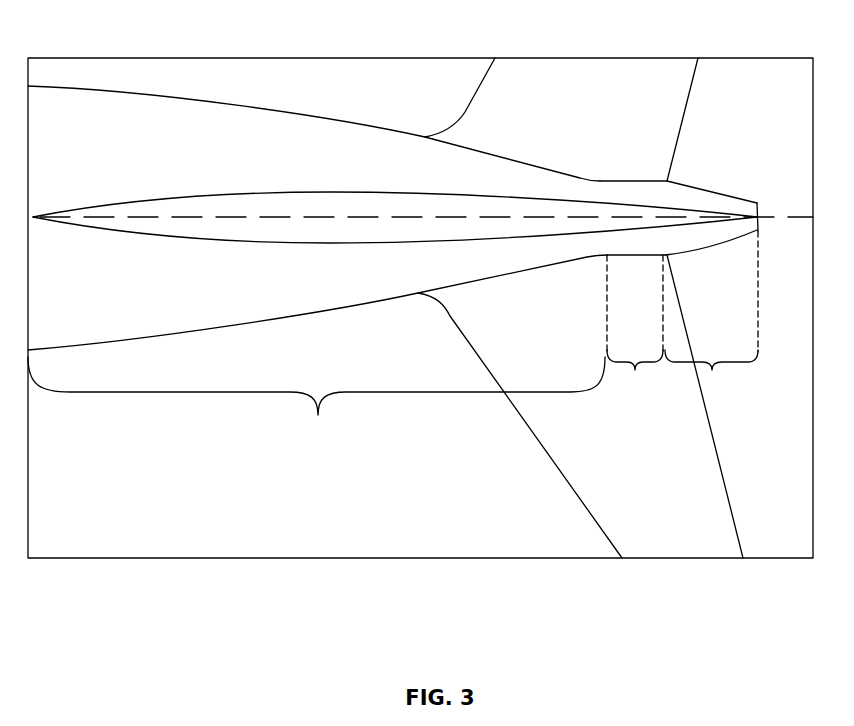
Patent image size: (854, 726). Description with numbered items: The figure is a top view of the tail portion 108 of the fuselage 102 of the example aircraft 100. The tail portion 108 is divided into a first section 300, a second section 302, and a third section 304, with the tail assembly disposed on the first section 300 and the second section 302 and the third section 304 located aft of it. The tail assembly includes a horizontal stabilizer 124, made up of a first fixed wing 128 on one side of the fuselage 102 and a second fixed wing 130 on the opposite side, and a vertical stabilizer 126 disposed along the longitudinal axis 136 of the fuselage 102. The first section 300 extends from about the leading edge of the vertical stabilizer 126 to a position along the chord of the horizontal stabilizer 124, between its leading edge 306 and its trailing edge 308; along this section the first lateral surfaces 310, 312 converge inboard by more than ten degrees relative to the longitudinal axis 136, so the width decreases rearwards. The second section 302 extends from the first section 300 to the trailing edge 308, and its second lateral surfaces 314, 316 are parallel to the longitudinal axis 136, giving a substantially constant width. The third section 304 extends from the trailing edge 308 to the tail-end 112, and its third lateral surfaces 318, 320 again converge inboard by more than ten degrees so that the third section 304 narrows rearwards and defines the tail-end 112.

The aircraft 100 is at (189, 499).
The fuselage 102 is at (88, 167).
The tail portion 108 is at (212, 72).
The tail-end 112 is at (760, 231).
The horizontal stabilizer 124 is at (695, 80).
The vertical stabilizer 126 is at (257, 200).
The first fixed wing 128 is at (552, 119).
The second fixed wing 130 is at (624, 486).
The longitudinal axis 136 is at (88, 228).
The first section 300 is at (318, 415).
The second section 302 is at (635, 366).
The third section 304 is at (712, 366).
The leading edge 306 is at (463, 103).
The trailing edge 308 is at (678, 146).
The first lateral surface 310 is at (335, 117).
The first lateral surface 312 is at (327, 318).
The second lateral surface 314 is at (627, 178).
The second lateral surface 316 is at (622, 258).
The third lateral surface 318 is at (748, 200).
The third lateral surface 320 is at (732, 242).